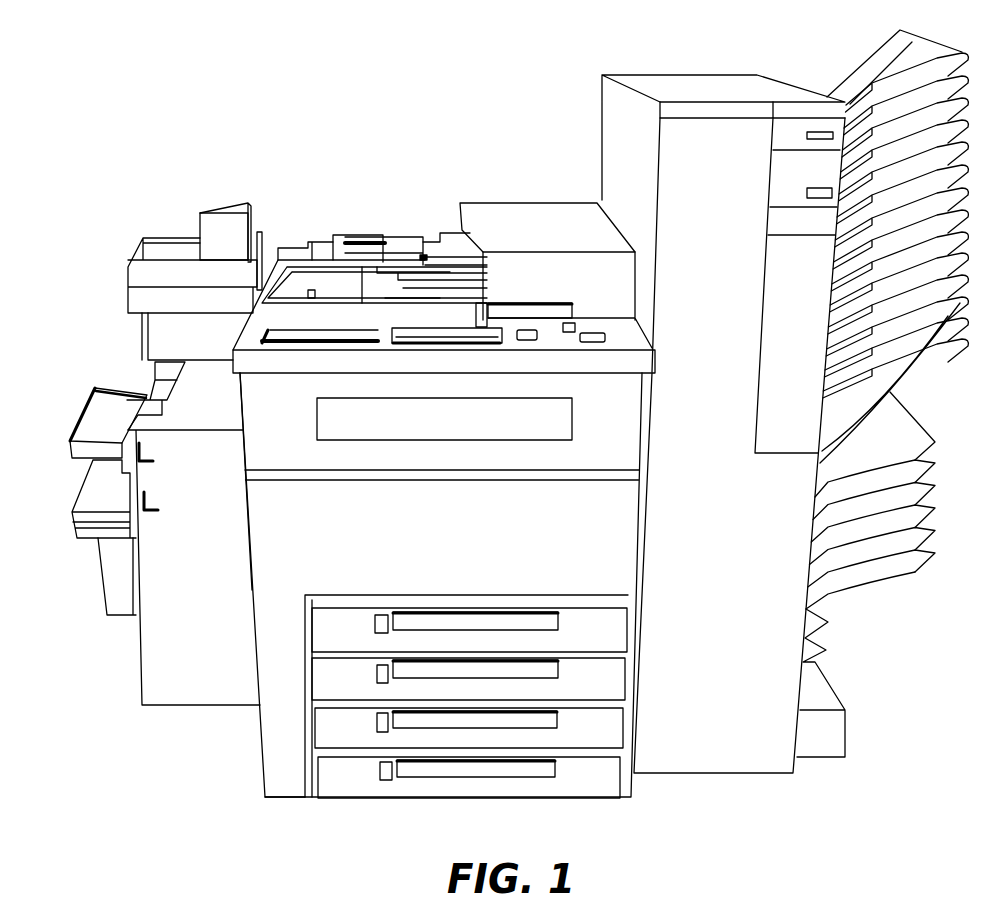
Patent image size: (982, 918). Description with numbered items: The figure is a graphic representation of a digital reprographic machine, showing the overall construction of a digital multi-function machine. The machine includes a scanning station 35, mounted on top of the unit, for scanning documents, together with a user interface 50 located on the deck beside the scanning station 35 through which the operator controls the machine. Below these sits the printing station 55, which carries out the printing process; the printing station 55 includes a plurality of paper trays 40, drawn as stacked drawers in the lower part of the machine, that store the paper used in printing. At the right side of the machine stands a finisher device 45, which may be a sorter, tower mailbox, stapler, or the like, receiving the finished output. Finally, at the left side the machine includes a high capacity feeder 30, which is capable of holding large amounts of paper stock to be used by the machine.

The high capacity feeder 30 is at (163, 707).
The scanning station 35 is at (370, 235).
The paper trays 40 is at (603, 797).
The finisher device 45 is at (778, 774).
The user interface 50 is at (467, 344).
The printing station 55 is at (265, 795).